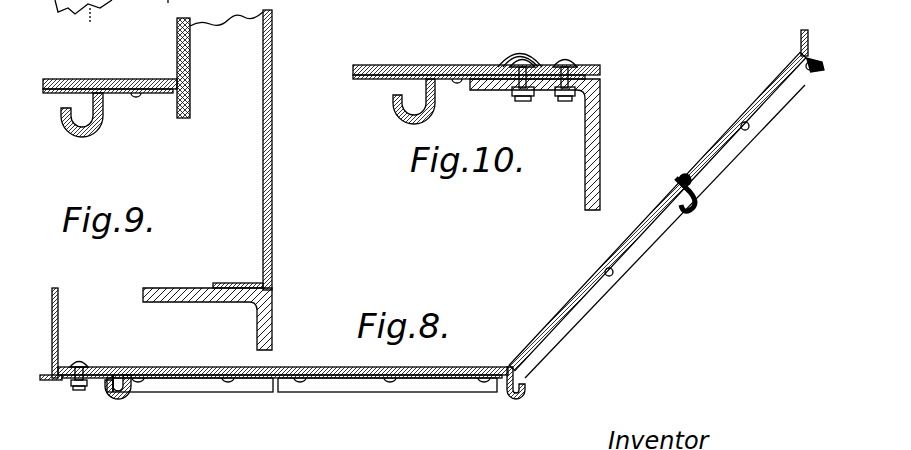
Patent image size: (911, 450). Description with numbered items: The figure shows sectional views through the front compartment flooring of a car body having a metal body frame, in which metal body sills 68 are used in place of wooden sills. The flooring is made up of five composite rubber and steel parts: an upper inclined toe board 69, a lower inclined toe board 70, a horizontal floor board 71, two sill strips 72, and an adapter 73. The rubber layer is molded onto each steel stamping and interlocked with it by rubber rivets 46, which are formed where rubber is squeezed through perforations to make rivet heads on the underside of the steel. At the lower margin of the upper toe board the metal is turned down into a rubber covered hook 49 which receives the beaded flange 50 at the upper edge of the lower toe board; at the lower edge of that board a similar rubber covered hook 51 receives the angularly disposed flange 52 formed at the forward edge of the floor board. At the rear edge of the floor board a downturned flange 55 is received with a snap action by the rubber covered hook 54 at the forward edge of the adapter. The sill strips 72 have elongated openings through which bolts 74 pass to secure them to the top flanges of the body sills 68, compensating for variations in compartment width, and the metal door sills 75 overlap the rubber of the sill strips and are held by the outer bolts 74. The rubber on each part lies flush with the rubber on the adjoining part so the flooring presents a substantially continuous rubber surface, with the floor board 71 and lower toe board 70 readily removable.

In FIG. 9, the rubber rivets 46 is at (137, 97).
In FIG. 10, the rubber rivets 46 is at (456, 82).
In FIG. 8, the rubber rivets 46 is at (303, 381).
In FIG. 8, the hook 49 is at (695, 203).
In FIG. 8, the beaded flange 50 is at (689, 215).
In FIG. 8, the hook 51 is at (526, 381).
In FIG. 8, the flange 52 is at (506, 391).
In FIG. 8, the hook 54 is at (126, 396).
In FIG. 8, the downturned flange 55 is at (113, 400).
In FIG. 9, the metal body sills 68 is at (275, 318).
In FIG. 10, the metal body sills 68 is at (600, 110).
In FIG. 8, the inclined toe board 69 is at (748, 123).
In FIG. 8, the inclined toe board 70 is at (618, 233).
In FIG. 10, the horizontal floor board 71 is at (374, 65).
In FIG. 8, the horizontal floor board 71 is at (319, 367).
In FIG. 9, the sill strips 72 is at (114, 79).
In FIG. 10, the sill strips 72 is at (452, 64).
In FIG. 8, the adapter 73 is at (97, 366).
In FIG. 10, the bolts 74 is at (571, 62).
In FIG. 10, the metal door sills 75 is at (536, 56).